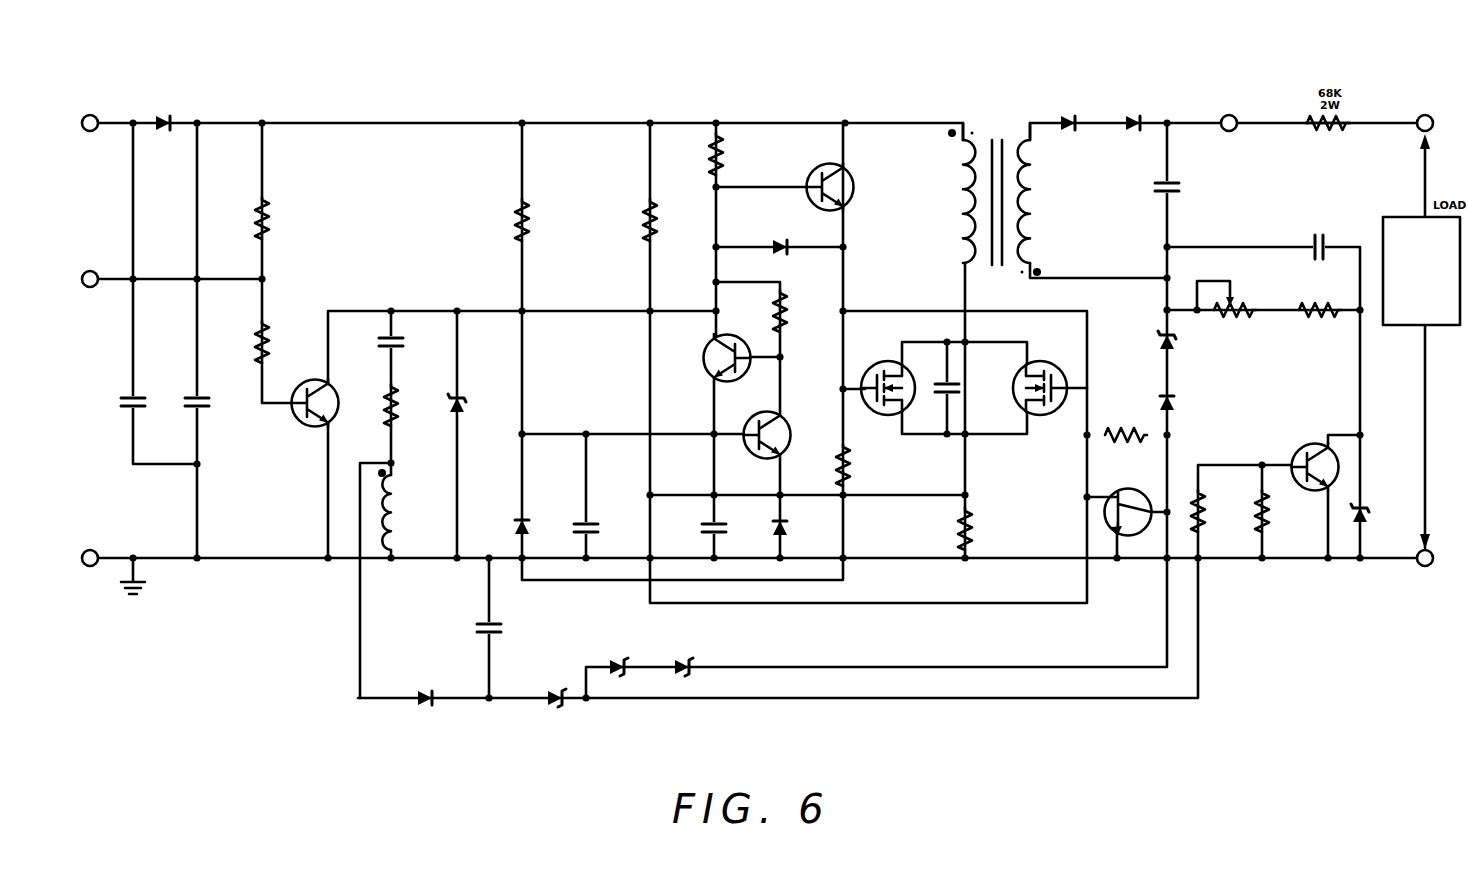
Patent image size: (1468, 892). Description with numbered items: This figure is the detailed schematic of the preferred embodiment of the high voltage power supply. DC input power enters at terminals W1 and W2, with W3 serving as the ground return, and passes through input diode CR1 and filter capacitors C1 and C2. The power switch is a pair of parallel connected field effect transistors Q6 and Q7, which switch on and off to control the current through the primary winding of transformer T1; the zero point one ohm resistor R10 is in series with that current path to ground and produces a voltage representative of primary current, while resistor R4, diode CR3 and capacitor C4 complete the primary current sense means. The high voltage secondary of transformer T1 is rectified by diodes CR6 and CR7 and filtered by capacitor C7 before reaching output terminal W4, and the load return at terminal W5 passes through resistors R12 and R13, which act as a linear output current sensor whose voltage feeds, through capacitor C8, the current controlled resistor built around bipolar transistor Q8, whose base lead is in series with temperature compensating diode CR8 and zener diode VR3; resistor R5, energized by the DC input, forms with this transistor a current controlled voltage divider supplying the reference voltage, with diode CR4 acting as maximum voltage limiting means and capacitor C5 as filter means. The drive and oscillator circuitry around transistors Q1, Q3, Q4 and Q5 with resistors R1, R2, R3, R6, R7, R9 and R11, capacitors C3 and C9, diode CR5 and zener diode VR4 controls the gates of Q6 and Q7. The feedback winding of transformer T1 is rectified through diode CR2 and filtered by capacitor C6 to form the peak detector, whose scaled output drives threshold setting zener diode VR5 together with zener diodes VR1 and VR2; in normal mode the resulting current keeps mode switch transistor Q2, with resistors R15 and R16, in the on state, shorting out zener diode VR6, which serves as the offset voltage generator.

The input terminal (red, +10V-18V) W1 is at (92, 132).
The enable/disable terminal (yellow) W2 is at (91, 288).
The ground terminal (black) W3 is at (92, 559).
The high voltage output terminal W4 is at (1231, 116).
The load return terminal W5 is at (1427, 566).
The diode 1N4006 CR1 is at (163, 108).
The diode FR155 CR2 is at (424, 684).
The diode CR3 is at (547, 527).
The diode CR4 is at (806, 523).
The diode 1N4148 CR5 is at (780, 233).
The diode CS54-08 CR6 is at (1065, 108).
The diode CS54-08 CR7 is at (1132, 108).
The temperature compensating diode CR8 is at (1195, 402).
The resistor 4.7K R1 is at (279, 217).
The resistor 4.7K R2 is at (279, 341).
The resistor 10K R3 is at (405, 404).
The resistor R4 is at (540, 218).
The resistor R5 is at (665, 218).
The resistor 10K R6 is at (731, 154).
The resistor 1K R7 is at (791, 309).
The resistor 1K R9 is at (855, 464).
The 0.1 Ohm resistor R10 is at (982, 528).
The resistor 10K R11 is at (1126, 419).
The resistor R12 is at (1253, 291).
The resistor R13 is at (1320, 296).
The resistor R15 is at (1217, 511).
The resistor R16 is at (1277, 511).
The capacitor .033uF 250WV C1 is at (154, 404).
The capacitor 470uF 50V C2 is at (216, 403).
The capacitor .0022uF 400WV C3 is at (415, 338).
The capacitor C4 is at (607, 533).
The capacitor C5 is at (730, 529).
The filter capacitor C6 is at (514, 630).
The capacitor .0025uF 10KV C7 is at (1190, 191).
The capacitor 10uF 35V C8 is at (1321, 235).
The capacitor .001uF 1000V C9 is at (969, 388).
The transistor MPS-6531 Q1 is at (333, 404).
The transistor switch Q2 is at (1304, 451).
The transistor MPSA42 Q3 is at (858, 187).
The transistor 2N4402 Q4 is at (736, 343).
The transistor MPSW01 Q5 is at (797, 435).
The field effect transistor Q6 is at (881, 376).
The field effect transistor Q7 is at (1043, 376).
The bipolar transistor Q8 is at (1129, 498).
The transformer T1 (primary / feedback winding) T1 is at (737, 309).
The zener diode 1N4761 VR1 is at (619, 655).
The zener diode Z200B VR2 is at (684, 655).
The zener diode VR3 is at (1197, 342).
The zener diode 1N4744A VR4 is at (483, 408).
The zener diode VR5 is at (556, 685).
The zener diode VR6 is at (1388, 512).